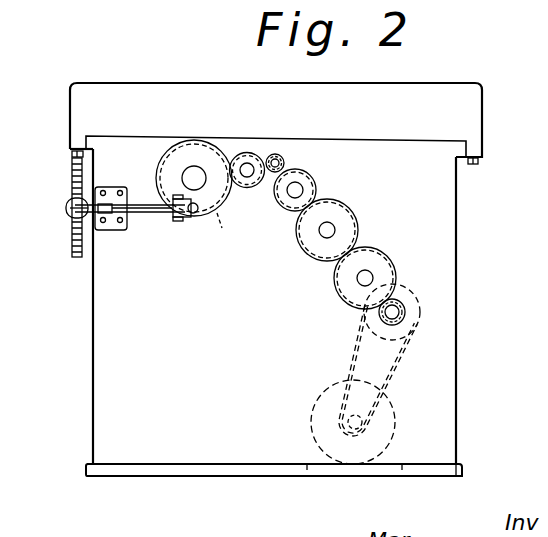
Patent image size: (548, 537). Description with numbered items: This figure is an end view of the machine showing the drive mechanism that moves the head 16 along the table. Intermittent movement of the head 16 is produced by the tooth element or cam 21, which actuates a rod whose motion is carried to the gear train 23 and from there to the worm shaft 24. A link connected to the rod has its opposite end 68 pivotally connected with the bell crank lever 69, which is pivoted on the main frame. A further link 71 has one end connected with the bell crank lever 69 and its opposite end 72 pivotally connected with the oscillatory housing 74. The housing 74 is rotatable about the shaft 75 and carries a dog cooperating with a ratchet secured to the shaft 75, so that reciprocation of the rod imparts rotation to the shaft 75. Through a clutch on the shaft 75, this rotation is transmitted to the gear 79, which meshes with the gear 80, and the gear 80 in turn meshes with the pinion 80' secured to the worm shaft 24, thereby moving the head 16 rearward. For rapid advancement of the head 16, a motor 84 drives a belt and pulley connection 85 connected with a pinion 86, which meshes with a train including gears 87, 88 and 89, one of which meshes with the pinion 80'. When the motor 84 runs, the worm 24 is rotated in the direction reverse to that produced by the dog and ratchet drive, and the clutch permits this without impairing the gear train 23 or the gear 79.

The head 16 is at (200, 86).
The tooth element or cam 21 is at (77, 258).
The gear train 23 is at (247, 189).
The worm shaft 24 is at (286, 165).
The end of link 68 is at (68, 204).
The bell crank lever 69 is at (98, 230).
The link 71 is at (146, 213).
The end of link 72 is at (179, 222).
The oscillatory housing 74 is at (157, 166).
The shaft 75 is at (190, 172).
The gear 79 is at (222, 228).
The gear 80 is at (247, 150).
The pinion 80' is at (288, 144).
The motor 84 is at (392, 405).
The belt and pulley connection 85 is at (398, 355).
The pinion 86 is at (402, 304).
The gear 87 is at (392, 263).
The gear 88 is at (356, 219).
The gear 89 is at (316, 187).